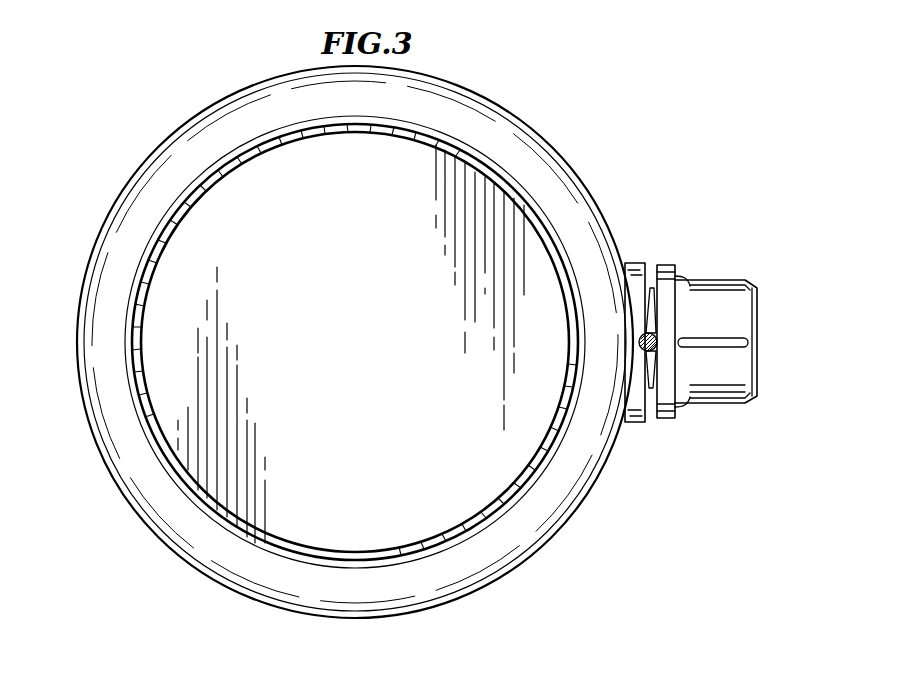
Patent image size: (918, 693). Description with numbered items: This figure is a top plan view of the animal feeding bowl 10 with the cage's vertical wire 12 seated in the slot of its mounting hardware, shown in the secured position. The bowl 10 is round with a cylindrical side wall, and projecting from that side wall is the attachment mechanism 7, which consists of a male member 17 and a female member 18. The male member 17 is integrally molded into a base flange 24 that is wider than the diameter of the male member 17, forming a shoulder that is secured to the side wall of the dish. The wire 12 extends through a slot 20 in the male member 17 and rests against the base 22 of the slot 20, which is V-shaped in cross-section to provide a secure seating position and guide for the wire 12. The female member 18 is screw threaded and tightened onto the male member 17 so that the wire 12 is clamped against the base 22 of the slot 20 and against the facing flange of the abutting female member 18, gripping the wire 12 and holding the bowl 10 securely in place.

The animal feeding bowl 10 is at (95, 485).
The attachment mechanism 7 is at (723, 359).
The vertical wire 12 is at (657, 338).
The male member 17 is at (651, 292).
The female member 18 is at (755, 366).
The slot 20 is at (714, 340).
The base of slot 22 is at (640, 342).
The base flange 24 is at (634, 424).